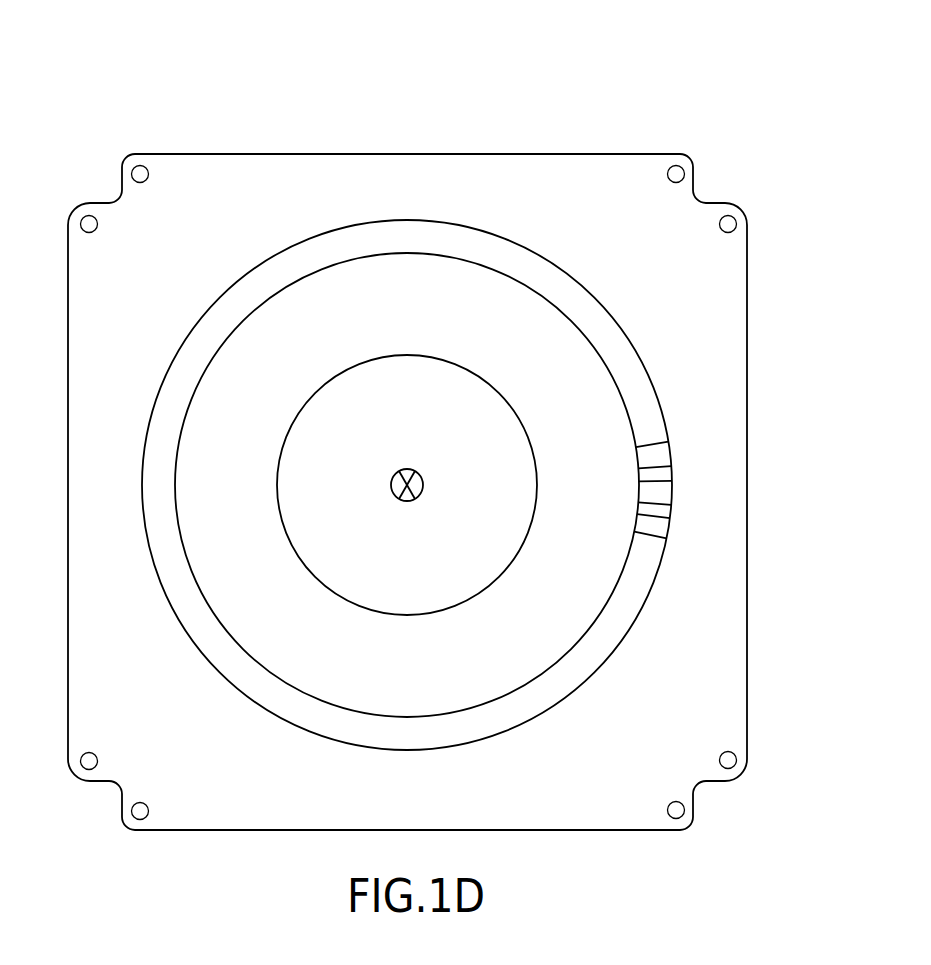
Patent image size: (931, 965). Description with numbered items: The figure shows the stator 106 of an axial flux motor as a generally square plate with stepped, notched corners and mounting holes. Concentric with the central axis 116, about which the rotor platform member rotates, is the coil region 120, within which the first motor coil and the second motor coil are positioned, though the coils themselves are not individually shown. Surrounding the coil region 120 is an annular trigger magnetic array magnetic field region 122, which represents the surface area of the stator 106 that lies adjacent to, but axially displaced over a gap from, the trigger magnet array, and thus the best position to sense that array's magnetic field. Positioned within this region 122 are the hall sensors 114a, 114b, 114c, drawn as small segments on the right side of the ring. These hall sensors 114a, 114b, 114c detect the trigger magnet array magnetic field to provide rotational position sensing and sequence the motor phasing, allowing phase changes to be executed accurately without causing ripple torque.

The stator 106 is at (74, 93).
The trigger magnetic array magnetic field region 122 is at (424, 250).
The coil region 120 is at (424, 322).
The central axis 116 is at (423, 475).
The first hall sensor 114a is at (670, 450).
The second hall sensor 114b is at (672, 492).
The hall sensor 114c is at (672, 533).